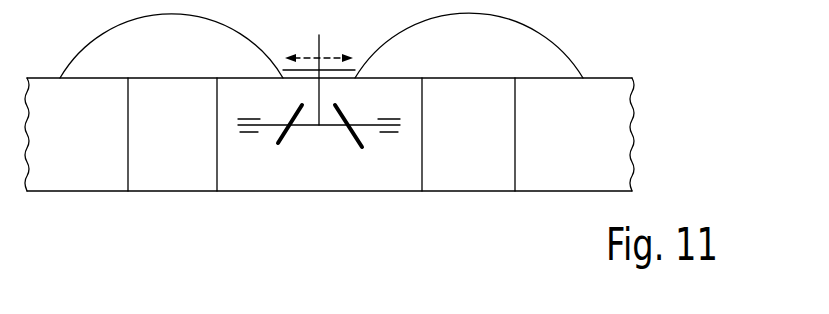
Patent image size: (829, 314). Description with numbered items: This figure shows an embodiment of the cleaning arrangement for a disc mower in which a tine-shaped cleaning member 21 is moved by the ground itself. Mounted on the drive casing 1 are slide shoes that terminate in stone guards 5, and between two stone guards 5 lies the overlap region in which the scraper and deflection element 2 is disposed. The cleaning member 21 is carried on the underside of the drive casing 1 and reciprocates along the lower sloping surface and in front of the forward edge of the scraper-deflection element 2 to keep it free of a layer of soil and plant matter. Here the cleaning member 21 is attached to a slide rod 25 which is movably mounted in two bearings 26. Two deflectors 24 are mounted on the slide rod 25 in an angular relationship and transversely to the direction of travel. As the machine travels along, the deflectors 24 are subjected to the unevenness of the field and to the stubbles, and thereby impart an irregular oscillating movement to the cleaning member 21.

The drive casing 1 is at (78, 178).
The scraper and deflection element 2 is at (346, 77).
The stone guard 5 is at (236, 50).
The tine-shaped cleaning member 21 is at (325, 48).
The deflector 24 is at (285, 138).
The slide rod 25 is at (337, 131).
The bearing 26 is at (250, 137).